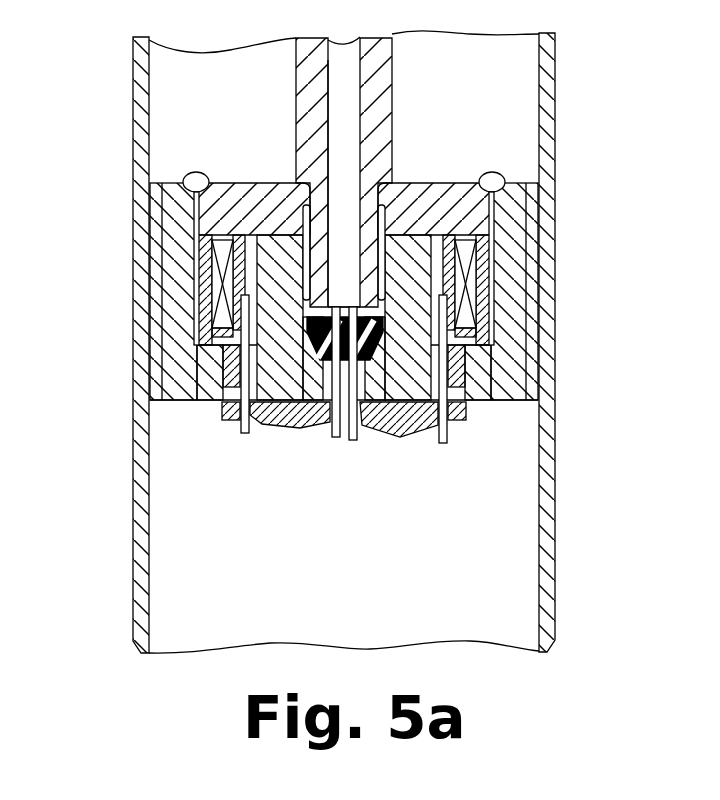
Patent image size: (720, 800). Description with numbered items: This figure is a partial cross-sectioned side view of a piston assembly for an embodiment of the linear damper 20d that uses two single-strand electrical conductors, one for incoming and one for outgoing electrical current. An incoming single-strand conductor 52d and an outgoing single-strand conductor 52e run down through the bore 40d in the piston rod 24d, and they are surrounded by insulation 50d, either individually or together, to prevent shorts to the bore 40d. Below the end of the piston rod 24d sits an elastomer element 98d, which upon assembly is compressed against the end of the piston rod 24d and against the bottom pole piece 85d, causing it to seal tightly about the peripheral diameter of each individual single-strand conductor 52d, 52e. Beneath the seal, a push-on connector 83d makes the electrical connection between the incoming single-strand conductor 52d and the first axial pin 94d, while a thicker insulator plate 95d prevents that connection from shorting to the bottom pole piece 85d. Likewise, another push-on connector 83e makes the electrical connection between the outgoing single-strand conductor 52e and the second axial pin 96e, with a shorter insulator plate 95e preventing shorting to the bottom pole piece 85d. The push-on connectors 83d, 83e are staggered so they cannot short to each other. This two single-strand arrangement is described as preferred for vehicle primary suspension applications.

The linear damper 20d is at (126, 355).
The piston rod 24d is at (302, 88).
The bore 40d is at (347, 90).
The insulation 50d is at (342, 53).
The incoming single-strand conductor 52d is at (352, 440).
The outgoing single-strand conductor 52e is at (335, 438).
The push-on connector 83d is at (395, 437).
The push-on connector 83e is at (290, 420).
The bottom pole piece 85d is at (420, 391).
The first axial pin 94d is at (441, 445).
The thicker insulator plate 95d is at (468, 422).
The shorter insulator plate 95e is at (222, 410).
The second axial pin 96e is at (243, 435).
The elastomer element 98d is at (380, 328).